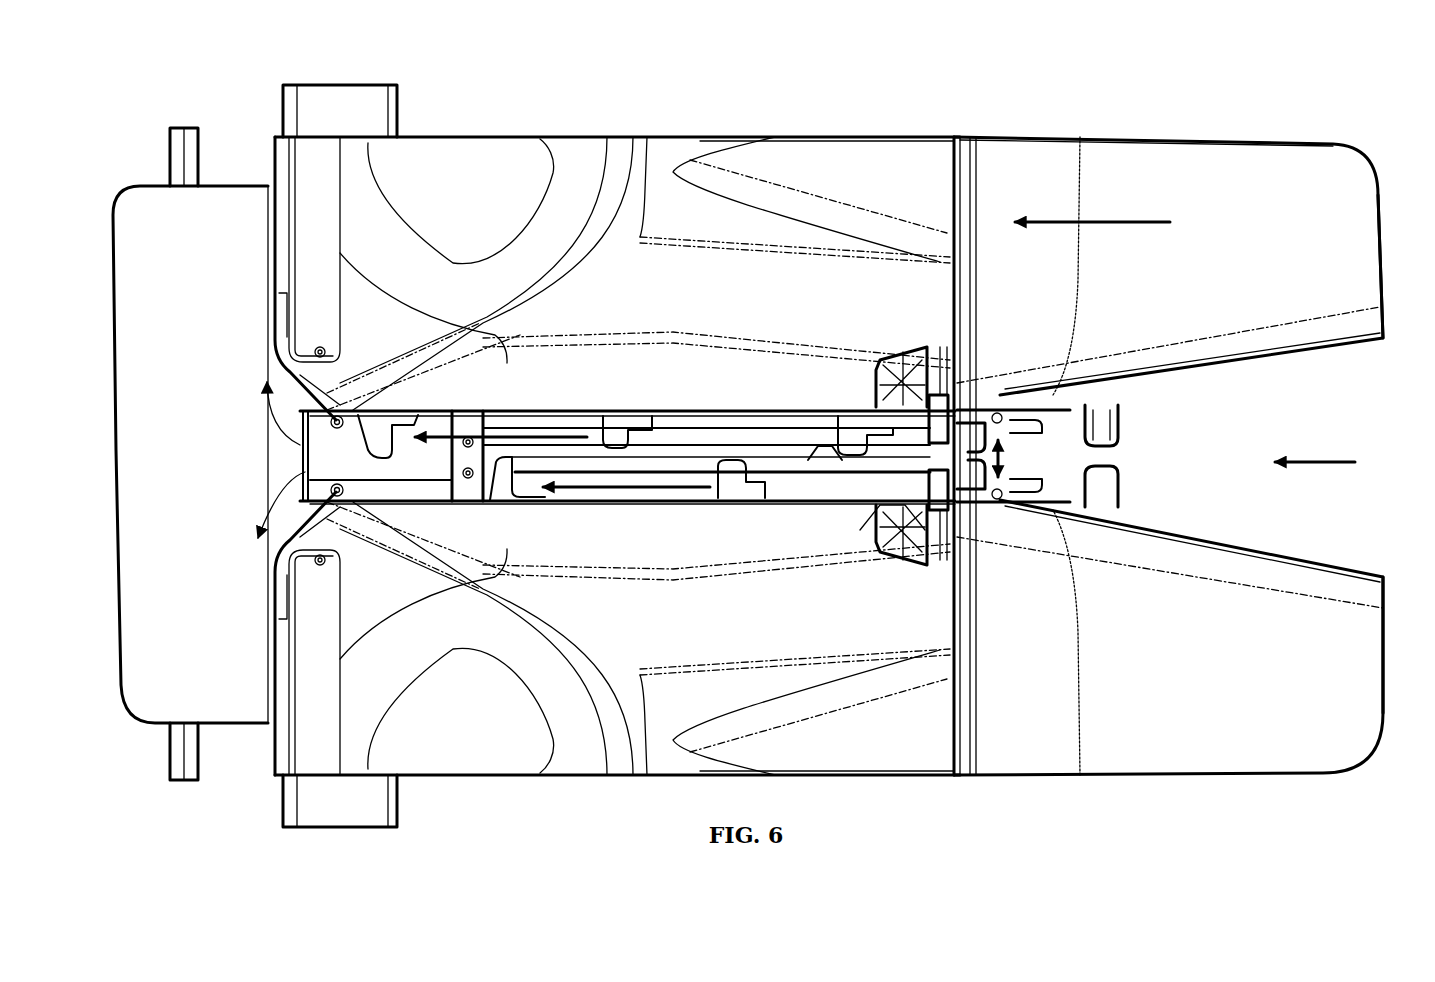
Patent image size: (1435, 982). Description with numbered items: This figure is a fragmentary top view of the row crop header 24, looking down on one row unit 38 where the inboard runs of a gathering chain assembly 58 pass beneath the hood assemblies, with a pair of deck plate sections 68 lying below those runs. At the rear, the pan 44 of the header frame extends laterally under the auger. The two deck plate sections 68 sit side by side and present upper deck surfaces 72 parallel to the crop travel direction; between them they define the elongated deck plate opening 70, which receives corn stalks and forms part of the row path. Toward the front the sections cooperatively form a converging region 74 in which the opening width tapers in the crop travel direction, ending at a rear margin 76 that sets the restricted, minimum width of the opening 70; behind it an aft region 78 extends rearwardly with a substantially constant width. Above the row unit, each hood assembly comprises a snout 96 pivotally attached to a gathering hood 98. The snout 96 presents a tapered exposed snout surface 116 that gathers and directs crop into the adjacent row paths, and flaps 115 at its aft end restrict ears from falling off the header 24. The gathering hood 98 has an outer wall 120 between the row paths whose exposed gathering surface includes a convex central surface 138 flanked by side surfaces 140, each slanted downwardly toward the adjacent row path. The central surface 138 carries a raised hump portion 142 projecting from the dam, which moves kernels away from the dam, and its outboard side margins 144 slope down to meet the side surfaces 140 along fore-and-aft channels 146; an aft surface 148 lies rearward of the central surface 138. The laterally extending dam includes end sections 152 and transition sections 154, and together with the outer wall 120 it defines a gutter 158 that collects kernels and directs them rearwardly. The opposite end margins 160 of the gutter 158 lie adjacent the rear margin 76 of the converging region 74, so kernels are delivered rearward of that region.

The header 24 is at (1288, 98).
The row unit 38 is at (1119, 409).
The pan 44 is at (240, 197).
The gathering chain assembly 58 is at (617, 400).
The deck plate section 68 is at (787, 400).
The deck plate opening 70 is at (1013, 419).
The upper deck surface 72 is at (727, 400).
The converging region 74 is at (973, 423).
The rear margin 76 is at (853, 522).
The aft region 78 is at (648, 500).
The snout 96 is at (1160, 160).
The gathering hood 98 is at (860, 150).
The flap 115 is at (950, 363).
The exposed snout surface 116 is at (1318, 178).
The outer wall 120 is at (575, 150).
The central surface 138 is at (670, 150).
The side surface 140 is at (480, 327).
The hump portion 142 is at (915, 155).
The outboard side margin 144 is at (700, 270).
The channel 146 is at (720, 353).
The aft surface 148 is at (403, 157).
The end section 152 is at (957, 303).
The transition section 154 is at (940, 273).
The gutter 158 is at (942, 157).
The end margin 160 is at (866, 386).